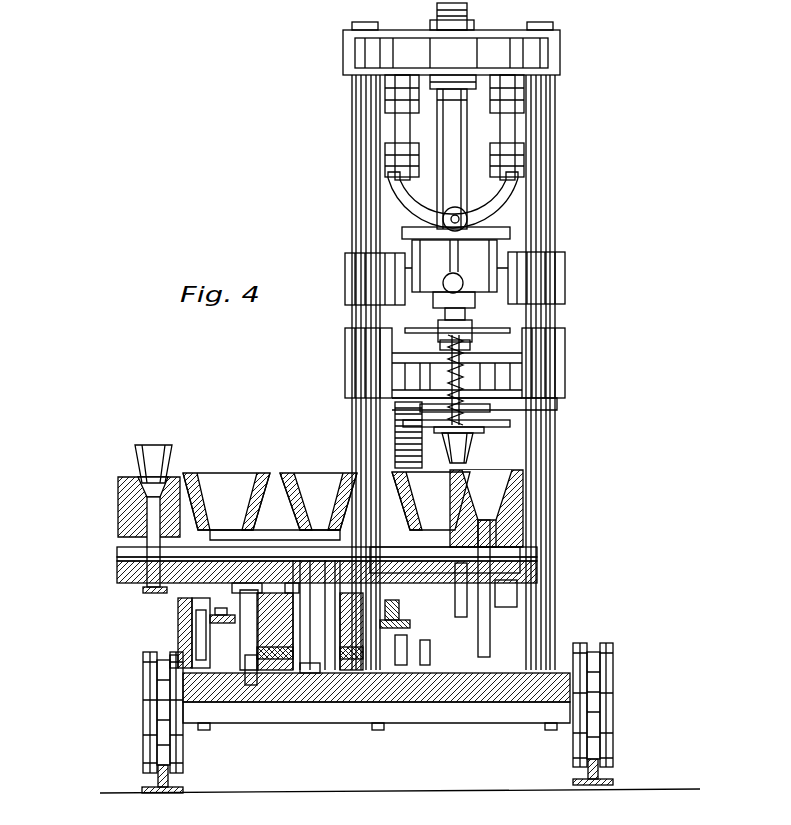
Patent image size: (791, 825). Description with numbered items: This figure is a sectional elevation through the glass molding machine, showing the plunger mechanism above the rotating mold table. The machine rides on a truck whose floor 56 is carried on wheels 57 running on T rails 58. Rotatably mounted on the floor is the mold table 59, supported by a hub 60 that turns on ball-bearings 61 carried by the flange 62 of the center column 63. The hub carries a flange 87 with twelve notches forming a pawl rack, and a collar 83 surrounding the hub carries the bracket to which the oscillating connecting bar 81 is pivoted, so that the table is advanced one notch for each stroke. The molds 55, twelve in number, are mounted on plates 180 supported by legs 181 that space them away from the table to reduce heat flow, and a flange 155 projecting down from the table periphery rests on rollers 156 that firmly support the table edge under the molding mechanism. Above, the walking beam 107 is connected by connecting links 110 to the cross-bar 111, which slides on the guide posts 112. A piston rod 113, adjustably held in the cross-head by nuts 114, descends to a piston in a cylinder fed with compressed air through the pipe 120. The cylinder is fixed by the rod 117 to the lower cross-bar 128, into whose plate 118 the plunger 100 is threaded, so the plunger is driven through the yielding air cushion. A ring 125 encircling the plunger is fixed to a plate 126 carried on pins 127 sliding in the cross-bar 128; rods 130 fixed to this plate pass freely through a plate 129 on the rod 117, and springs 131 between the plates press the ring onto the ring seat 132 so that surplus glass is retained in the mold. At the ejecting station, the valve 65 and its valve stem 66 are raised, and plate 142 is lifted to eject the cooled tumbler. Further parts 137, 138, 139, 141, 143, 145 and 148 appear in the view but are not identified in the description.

The mold 55 is at (300, 480).
The floor 56 is at (460, 686).
The wheels 57 is at (148, 738).
The T rails 58 is at (145, 783).
The mold table 59 is at (117, 569).
The hub 60 is at (283, 620).
The ball-bearings 61 is at (285, 640).
The flange 62 is at (282, 657).
The center column 63 is at (275, 582).
The valve 65 is at (140, 497).
The valve stem 66 is at (150, 515).
The connecting bar 81 is at (400, 640).
The collar 83 is at (280, 600).
The flange 87 is at (240, 601).
The plunger 100 is at (472, 448).
The walking beam 107 is at (400, 198).
The connecting links 110 is at (398, 123).
The cross-bar 111 is at (555, 40).
The guide posts 112 is at (555, 186).
The piston rod 113 is at (452, 125).
The nuts 114 is at (423, 77).
The rod 117 is at (465, 315).
The plate 118 is at (480, 395).
The pipe 120 is at (455, 262).
The ring 125 is at (490, 432).
The plate 126 is at (505, 423).
The pins 127 is at (510, 410).
The cross-bar 128 is at (535, 355).
The plate 129 is at (510, 330).
The rods 130 is at (462, 350).
The springs 131 is at (445, 340).
The ring seat 132 is at (515, 462).
The lever 137 is at (180, 642).
The pivot 138 is at (170, 650).
The cam 139 is at (200, 640).
The slide 141 is at (180, 621).
The plate 142 is at (121, 611).
The funnel 143 is at (172, 455).
The valve stem 145 is at (420, 640).
The pipe 148 is at (250, 680).
The flange 155 is at (520, 565).
The rollers 156 is at (517, 600).
The plates 180 is at (117, 550).
The legs 181 is at (117, 559).